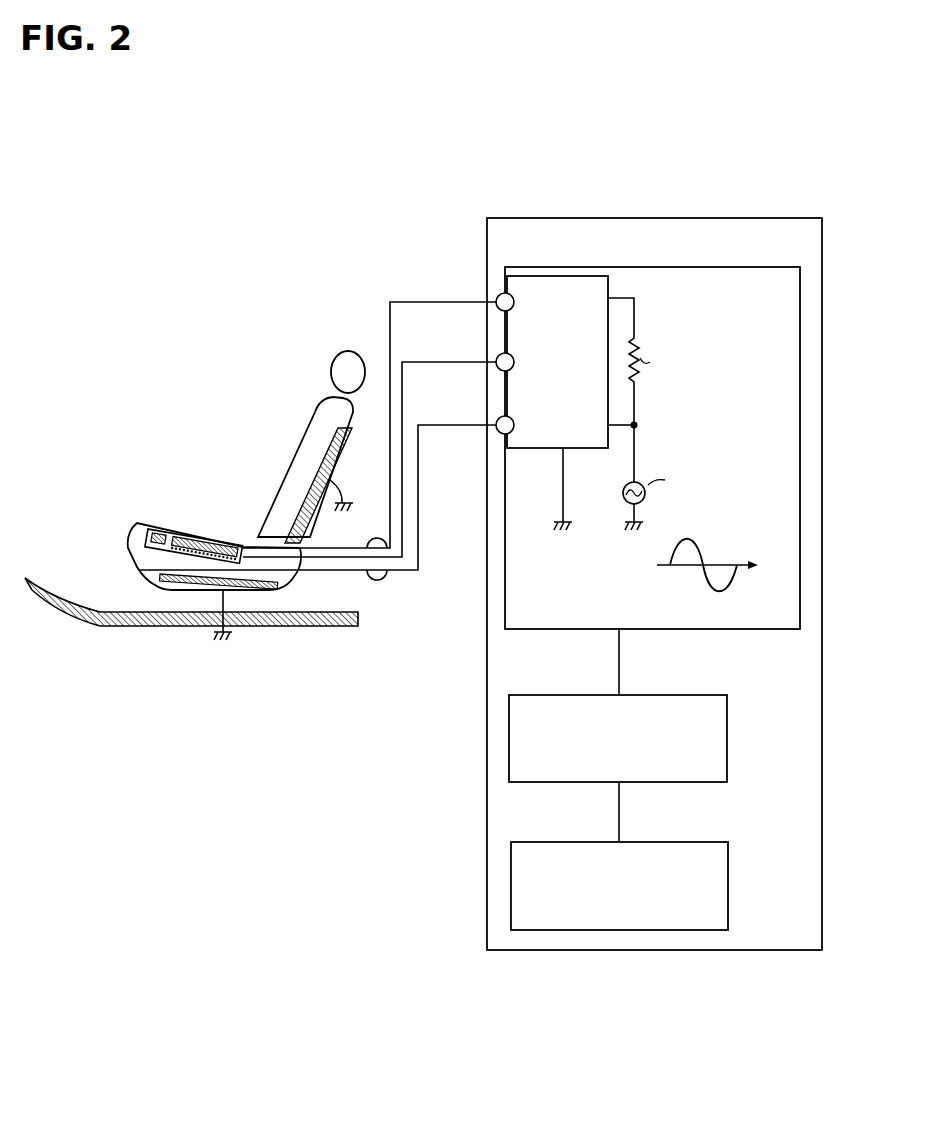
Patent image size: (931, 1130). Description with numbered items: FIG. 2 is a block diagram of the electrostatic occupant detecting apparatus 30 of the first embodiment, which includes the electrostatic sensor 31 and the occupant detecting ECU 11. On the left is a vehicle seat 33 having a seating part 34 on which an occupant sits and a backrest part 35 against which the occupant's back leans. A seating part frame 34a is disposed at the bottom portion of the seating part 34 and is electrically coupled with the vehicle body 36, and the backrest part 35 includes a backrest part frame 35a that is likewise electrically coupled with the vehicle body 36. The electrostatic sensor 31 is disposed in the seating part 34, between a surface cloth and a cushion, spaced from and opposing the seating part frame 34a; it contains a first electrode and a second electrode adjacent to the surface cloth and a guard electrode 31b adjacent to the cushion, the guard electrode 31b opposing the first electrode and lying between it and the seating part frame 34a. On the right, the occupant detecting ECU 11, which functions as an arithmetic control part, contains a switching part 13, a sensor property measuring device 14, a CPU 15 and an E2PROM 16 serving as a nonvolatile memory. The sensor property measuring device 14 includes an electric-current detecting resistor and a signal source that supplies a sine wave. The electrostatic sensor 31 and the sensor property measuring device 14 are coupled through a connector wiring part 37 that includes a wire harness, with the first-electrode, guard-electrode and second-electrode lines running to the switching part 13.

The electrostatic occupant detecting apparatus 30 is at (423, 535).
The occupant detecting ECU 11 is at (505, 218).
The sensor property measuring device 14 is at (670, 266).
The switching part 13 is at (531, 422).
The CPU 15 is at (727, 737).
The E2PROM 16 is at (727, 886).
The seat 33 is at (265, 396).
The seating part 34 is at (208, 514).
The seating part frame 34a is at (158, 577).
The backrest part 35 is at (286, 448).
The backrest part frame 35a is at (347, 443).
The electrostatic sensor 31 is at (167, 511).
The guard electrode 31b is at (160, 538).
The vehicle body 36 is at (42, 578).
The connector wiring part 37 is at (382, 584).